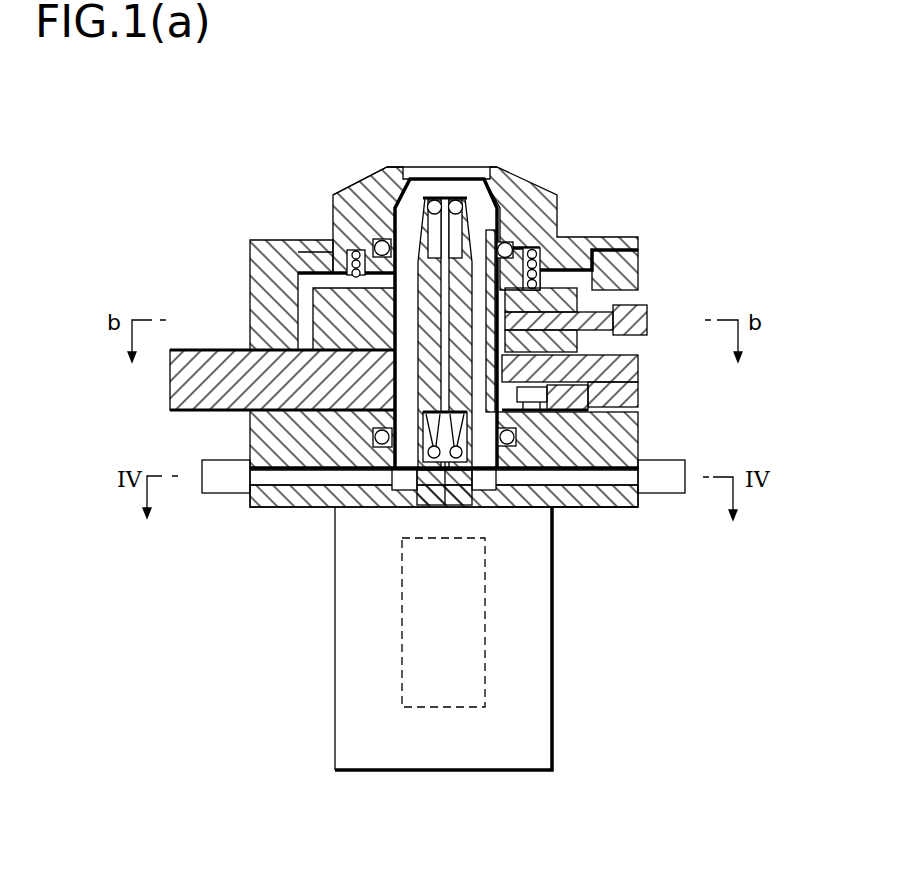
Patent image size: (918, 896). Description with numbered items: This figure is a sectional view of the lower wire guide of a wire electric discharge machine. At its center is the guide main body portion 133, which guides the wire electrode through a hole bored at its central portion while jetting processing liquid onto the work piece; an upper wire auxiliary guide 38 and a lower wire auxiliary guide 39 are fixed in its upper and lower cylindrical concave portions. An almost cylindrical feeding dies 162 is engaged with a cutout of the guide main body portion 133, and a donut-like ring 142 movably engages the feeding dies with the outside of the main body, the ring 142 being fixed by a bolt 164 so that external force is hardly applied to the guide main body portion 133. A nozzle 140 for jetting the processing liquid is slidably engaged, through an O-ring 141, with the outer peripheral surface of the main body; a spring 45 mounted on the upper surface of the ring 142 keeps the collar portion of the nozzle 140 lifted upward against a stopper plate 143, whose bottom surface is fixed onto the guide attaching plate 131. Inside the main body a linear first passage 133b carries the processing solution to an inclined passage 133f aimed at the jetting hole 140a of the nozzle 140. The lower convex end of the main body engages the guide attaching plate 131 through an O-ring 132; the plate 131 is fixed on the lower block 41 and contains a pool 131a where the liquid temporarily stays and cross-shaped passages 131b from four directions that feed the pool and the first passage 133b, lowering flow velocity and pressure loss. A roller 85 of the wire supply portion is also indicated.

The nozzle 140 is at (370, 175).
The jetting hole 140a is at (438, 168).
The wire auxiliary guide 38 is at (452, 197).
The feeding dies 162 is at (516, 262).
The spring 45 is at (528, 262).
The passage 133f is at (365, 182).
The O-ring 141 is at (417, 223).
The stopper plate 143 is at (250, 262).
The ring 142 is at (322, 320).
The guide main body portion 133 is at (178, 402).
The first passage 133b is at (400, 378).
The O-ring 132 is at (382, 472).
The wire auxiliary guide 39 is at (425, 468).
The guide attaching plate 131 is at (265, 507).
The pool 131a is at (505, 507).
The passage 131b is at (602, 507).
The lower block 41 is at (355, 656).
The roller 85 is at (440, 695).
The bolt 164 is at (648, 332).